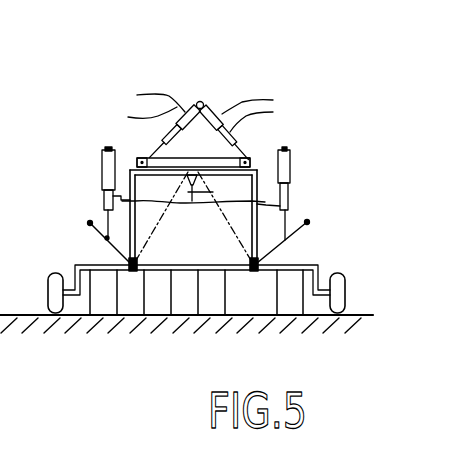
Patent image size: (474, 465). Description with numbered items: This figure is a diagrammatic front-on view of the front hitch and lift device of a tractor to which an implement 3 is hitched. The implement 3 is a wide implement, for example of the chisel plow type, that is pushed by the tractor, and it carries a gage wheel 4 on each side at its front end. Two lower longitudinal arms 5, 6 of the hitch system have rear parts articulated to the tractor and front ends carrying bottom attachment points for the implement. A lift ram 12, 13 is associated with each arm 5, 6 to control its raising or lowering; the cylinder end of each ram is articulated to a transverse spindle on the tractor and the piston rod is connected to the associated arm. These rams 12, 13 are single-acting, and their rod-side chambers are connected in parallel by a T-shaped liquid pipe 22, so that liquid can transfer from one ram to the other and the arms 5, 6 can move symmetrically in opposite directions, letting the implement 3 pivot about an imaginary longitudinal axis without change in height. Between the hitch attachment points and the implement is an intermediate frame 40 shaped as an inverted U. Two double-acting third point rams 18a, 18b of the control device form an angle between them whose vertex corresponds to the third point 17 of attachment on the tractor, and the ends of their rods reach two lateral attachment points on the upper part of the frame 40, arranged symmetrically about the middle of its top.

The implement 3 is at (303, 263).
The gage wheel 4 is at (50, 283).
The lower longitudinal arm 5 is at (307, 222).
The lower longitudinal arm 6 is at (90, 223).
The lift ram 12 is at (291, 172).
The lift ram 13 is at (103, 171).
The third point of attachment 17 is at (200, 102).
The third point ram 18a is at (207, 104).
The third point ram 18b is at (180, 110).
The liquid pipe 22 is at (213, 192).
The intermediate frame 40 is at (135, 200).